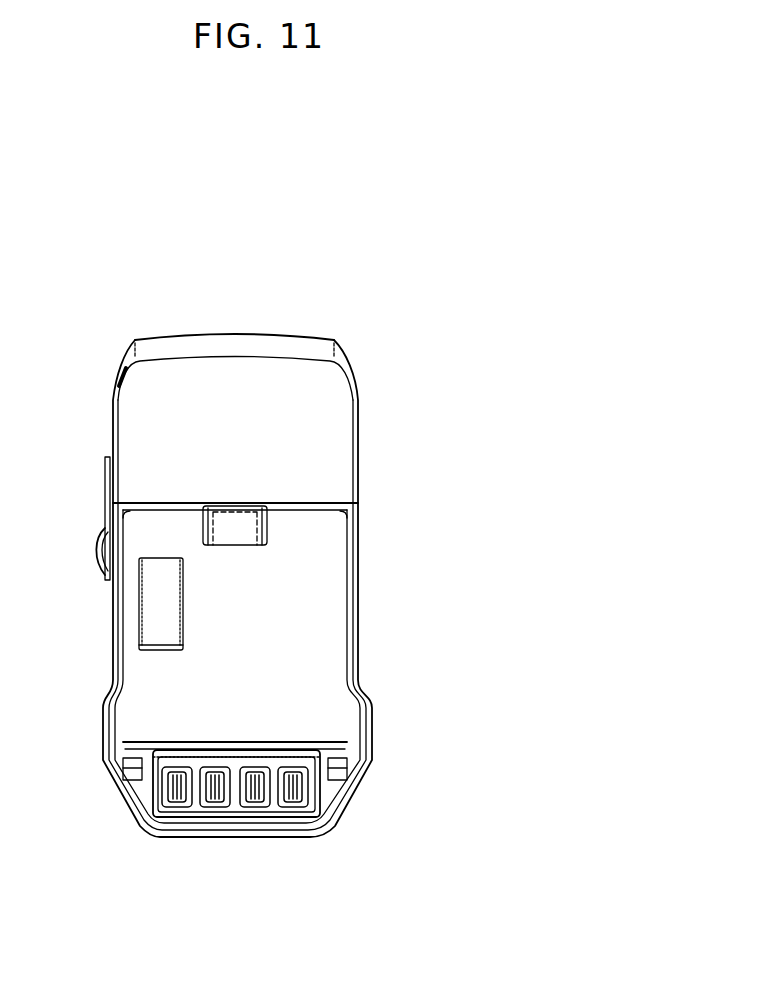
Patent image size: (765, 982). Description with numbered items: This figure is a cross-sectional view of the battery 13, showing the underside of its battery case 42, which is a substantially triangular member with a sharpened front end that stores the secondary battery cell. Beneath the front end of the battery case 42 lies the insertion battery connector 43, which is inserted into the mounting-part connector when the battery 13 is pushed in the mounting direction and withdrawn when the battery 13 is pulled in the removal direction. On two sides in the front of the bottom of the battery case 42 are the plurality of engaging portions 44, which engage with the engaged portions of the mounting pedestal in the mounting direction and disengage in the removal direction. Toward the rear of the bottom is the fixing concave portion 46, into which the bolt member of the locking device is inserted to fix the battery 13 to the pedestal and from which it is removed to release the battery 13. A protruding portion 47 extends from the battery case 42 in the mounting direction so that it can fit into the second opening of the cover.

The battery 13 is at (286, 332).
The battery case 42 is at (318, 410).
The insertion battery connector 43 is at (175, 813).
The engaging portions 44 is at (143, 785).
The fixing concave portion 46 is at (242, 533).
The protruding portion 47 is at (160, 616).